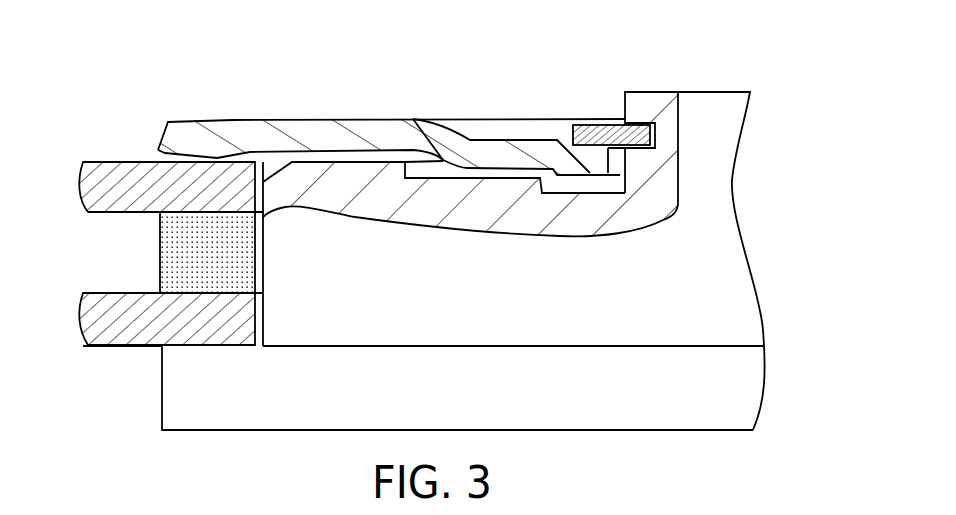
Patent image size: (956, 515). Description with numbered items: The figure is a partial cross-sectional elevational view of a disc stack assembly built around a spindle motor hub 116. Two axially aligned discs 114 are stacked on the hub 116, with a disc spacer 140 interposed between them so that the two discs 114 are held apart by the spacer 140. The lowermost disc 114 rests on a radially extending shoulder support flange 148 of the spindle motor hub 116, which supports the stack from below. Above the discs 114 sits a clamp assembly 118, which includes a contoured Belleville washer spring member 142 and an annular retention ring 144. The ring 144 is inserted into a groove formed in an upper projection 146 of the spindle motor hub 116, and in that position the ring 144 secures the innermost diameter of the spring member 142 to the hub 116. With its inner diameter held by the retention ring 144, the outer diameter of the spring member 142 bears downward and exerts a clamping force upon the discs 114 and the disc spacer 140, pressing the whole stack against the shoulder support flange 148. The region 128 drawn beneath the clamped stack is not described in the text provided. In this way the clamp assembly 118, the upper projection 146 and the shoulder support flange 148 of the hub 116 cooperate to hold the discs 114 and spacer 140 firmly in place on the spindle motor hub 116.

The disc 114 is at (106, 172).
The spindle motor hub 116 is at (727, 233).
The clamp assembly 118 is at (306, 87).
The cavity 128 is at (370, 346).
The disc spacer 140 is at (160, 253).
The spring member 142 is at (348, 118).
The annular retention ring 144 is at (612, 121).
The upper projection 146 is at (725, 90).
The shoulder support flange 148 is at (173, 412).